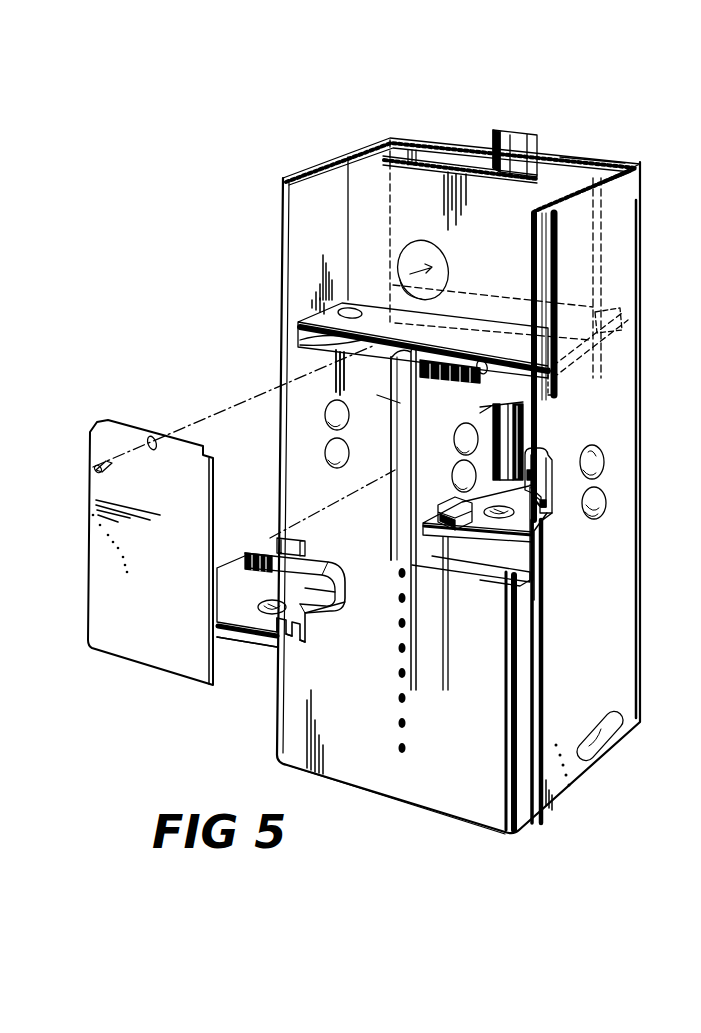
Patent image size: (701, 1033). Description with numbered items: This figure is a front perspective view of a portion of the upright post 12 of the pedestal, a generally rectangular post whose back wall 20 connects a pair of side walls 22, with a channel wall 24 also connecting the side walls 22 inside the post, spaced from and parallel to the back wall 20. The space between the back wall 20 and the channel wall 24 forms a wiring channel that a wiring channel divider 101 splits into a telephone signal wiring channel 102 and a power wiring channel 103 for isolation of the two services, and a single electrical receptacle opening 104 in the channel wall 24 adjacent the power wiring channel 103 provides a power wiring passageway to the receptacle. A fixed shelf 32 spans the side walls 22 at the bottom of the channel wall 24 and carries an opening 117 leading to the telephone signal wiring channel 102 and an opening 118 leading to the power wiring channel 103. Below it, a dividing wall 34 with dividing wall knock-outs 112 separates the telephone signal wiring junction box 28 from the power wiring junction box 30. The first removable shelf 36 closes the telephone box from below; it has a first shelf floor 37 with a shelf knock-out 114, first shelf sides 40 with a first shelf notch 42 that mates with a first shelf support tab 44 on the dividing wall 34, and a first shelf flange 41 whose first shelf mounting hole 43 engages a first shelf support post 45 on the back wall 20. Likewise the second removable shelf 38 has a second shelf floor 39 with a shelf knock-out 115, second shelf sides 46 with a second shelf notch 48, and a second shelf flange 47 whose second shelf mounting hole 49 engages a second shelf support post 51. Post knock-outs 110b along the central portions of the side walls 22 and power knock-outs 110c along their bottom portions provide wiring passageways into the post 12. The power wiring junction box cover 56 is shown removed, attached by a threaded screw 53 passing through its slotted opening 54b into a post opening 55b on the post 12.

The upright post 12 is at (203, 346).
The back wall 20 is at (563, 152).
The side walls 22 is at (300, 207).
The channel wall 24 is at (600, 283).
The telephone signal wiring junction box 28 is at (493, 450).
The power wiring junction box 30 is at (305, 389).
The fixed shelf 32 is at (548, 358).
The dividing wall 34 is at (433, 410).
The first removable shelf 36 is at (560, 515).
The first shelf floor 37 is at (543, 527).
The second removable shelf 38 is at (230, 640).
The second shelf floor 39 is at (225, 582).
The first shelf sides 40 is at (463, 483).
The first shelf flange 41 is at (586, 449).
The first shelf notch 42 is at (477, 513).
The first shelf mounting hole 43 is at (527, 453).
The first shelf support tab 44 is at (438, 528).
The first shelf support post 45 is at (547, 507).
The second shelf sides 46 is at (338, 623).
The second shelf flange 47 is at (310, 580).
The second shelf notch 48 is at (297, 643).
The second shelf mounting hole 49 is at (315, 578).
The second shelf support post 51 is at (398, 468).
The threaded screw 53 is at (93, 470).
The slotted opening 54b is at (153, 440).
The post opening 55b is at (300, 340).
The power wiring junction box cover 56 is at (110, 563).
The wiring channel divider 101 is at (537, 147).
The telephone signal wiring channel 102 is at (584, 172).
The power wiring channel 103 is at (443, 150).
The electrical receptacle opening 104 is at (400, 273).
The post knock-outs 110b is at (325, 413).
The power knock-outs 110c is at (612, 722).
The dividing wall knock-outs 112 is at (466, 466).
The shelf knock-out 114 is at (540, 570).
The shelf knock-out 115 is at (258, 607).
The opening 117 is at (617, 316).
The opening 118 is at (330, 309).